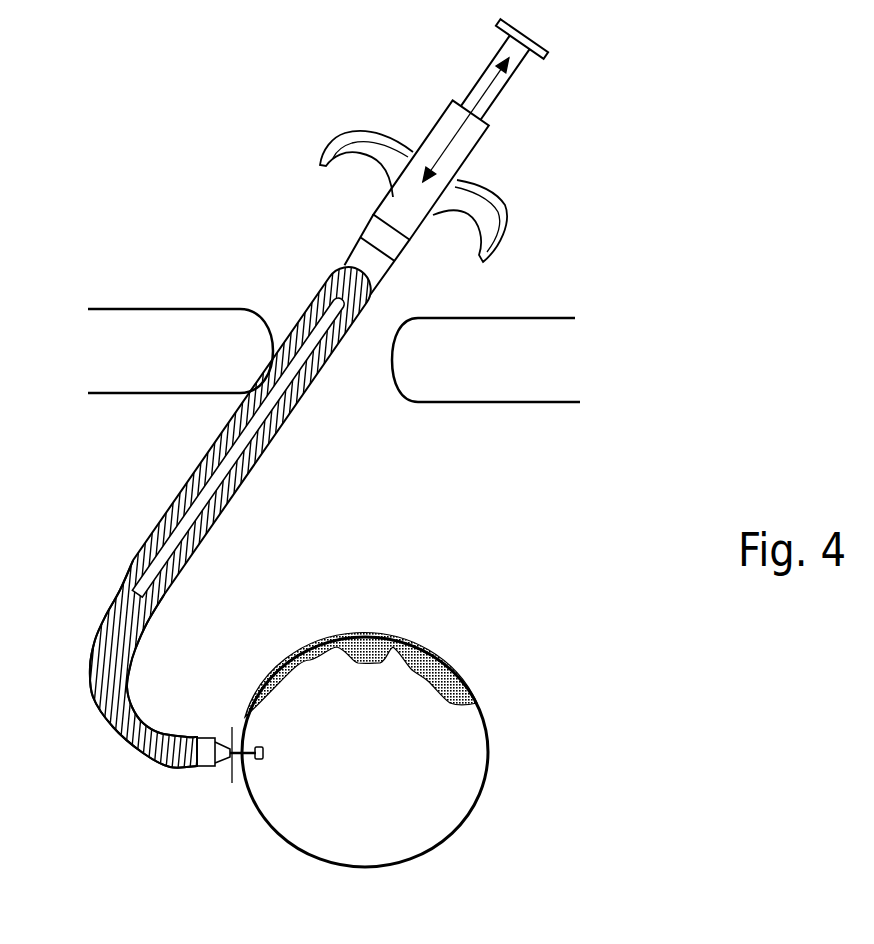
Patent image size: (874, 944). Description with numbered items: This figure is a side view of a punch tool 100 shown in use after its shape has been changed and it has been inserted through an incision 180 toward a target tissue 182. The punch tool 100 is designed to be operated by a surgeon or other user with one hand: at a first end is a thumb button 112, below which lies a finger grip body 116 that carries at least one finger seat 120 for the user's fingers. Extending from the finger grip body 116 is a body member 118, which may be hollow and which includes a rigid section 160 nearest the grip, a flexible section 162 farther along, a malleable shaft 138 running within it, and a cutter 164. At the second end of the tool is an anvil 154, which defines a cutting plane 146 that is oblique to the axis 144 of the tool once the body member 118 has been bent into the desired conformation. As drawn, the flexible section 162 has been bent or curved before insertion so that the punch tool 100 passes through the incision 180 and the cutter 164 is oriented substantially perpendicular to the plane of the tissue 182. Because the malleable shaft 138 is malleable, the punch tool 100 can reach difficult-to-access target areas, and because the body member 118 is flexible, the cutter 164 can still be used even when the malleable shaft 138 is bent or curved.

The punch tool 100 is at (255, 197).
The thumb button 112 is at (513, 88).
The finger grip body 116 is at (475, 153).
The finger seat 120 is at (487, 197).
The axis 144 is at (495, 80).
The rigid section 160 is at (357, 253).
The body member 118 is at (248, 477).
The malleable shaft 138 is at (198, 508).
The flexible section 162 is at (130, 577).
The anvil 154 is at (212, 767).
The cutter 164 is at (222, 752).
The cutting plane 146 is at (230, 737).
The incision 180 is at (363, 377).
The tissue 182 is at (448, 805).